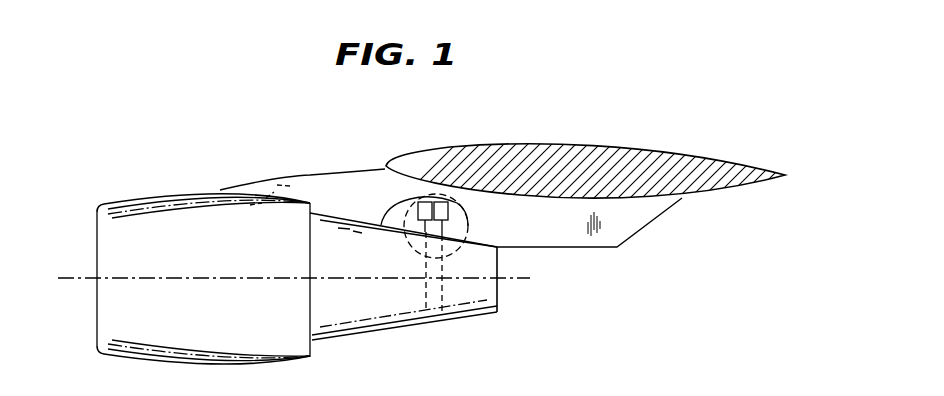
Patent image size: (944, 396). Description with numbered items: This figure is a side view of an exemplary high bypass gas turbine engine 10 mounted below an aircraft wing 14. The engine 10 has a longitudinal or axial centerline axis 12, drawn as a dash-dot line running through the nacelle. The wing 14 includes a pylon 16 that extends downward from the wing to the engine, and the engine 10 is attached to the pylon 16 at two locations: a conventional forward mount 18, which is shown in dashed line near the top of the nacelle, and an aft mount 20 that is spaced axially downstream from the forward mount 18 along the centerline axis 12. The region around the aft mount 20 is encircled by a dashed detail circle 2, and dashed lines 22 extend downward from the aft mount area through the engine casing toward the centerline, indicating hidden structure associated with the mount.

The detail region of valve assembly 2 is at (464, 207).
The high bypass gas turbine engine 10 is at (140, 194).
The longitudinal or axial centerline axis 12 is at (60, 281).
The aircraft wing 14 is at (678, 151).
The pylon 16 is at (652, 223).
The forward mount 18 is at (273, 176).
The aft mount 20 is at (410, 235).
The duct conduit 22 is at (424, 258).